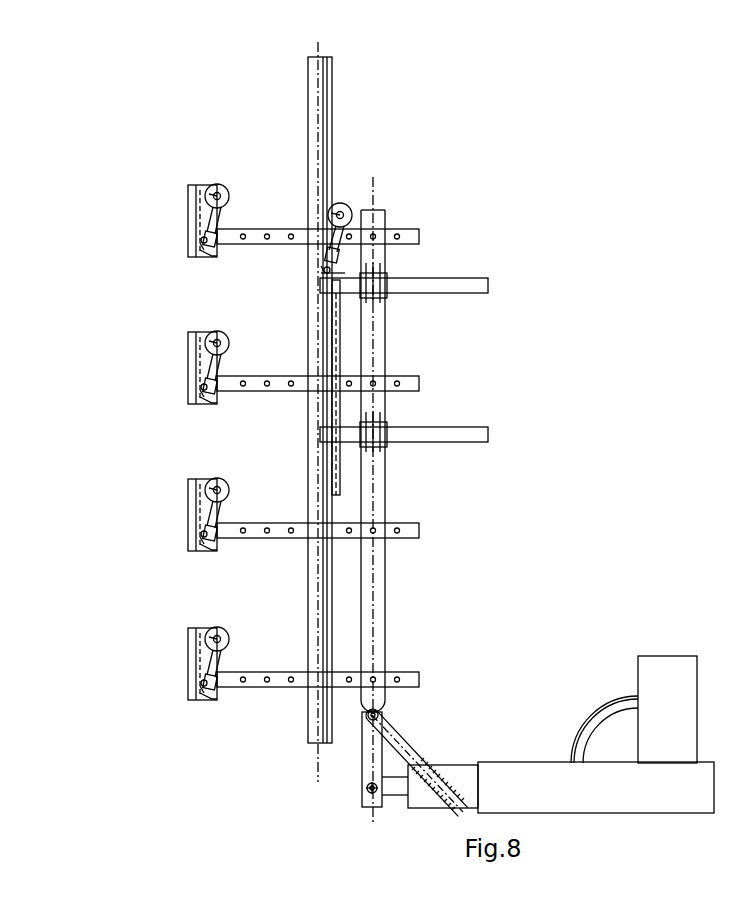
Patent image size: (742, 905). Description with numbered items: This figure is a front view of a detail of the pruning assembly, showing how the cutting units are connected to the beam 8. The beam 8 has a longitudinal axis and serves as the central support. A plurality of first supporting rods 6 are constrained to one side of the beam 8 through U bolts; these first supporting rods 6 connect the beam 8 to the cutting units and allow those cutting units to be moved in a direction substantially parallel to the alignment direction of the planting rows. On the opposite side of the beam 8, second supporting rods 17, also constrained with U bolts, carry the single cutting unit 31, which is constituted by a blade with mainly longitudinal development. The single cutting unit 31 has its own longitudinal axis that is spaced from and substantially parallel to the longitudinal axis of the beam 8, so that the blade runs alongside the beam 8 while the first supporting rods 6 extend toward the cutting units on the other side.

The single cutting unit 31 is at (334, 98).
The beam 8 is at (385, 590).
The first supporting rods 6 is at (405, 226).
The second supporting rods 17 is at (463, 277).